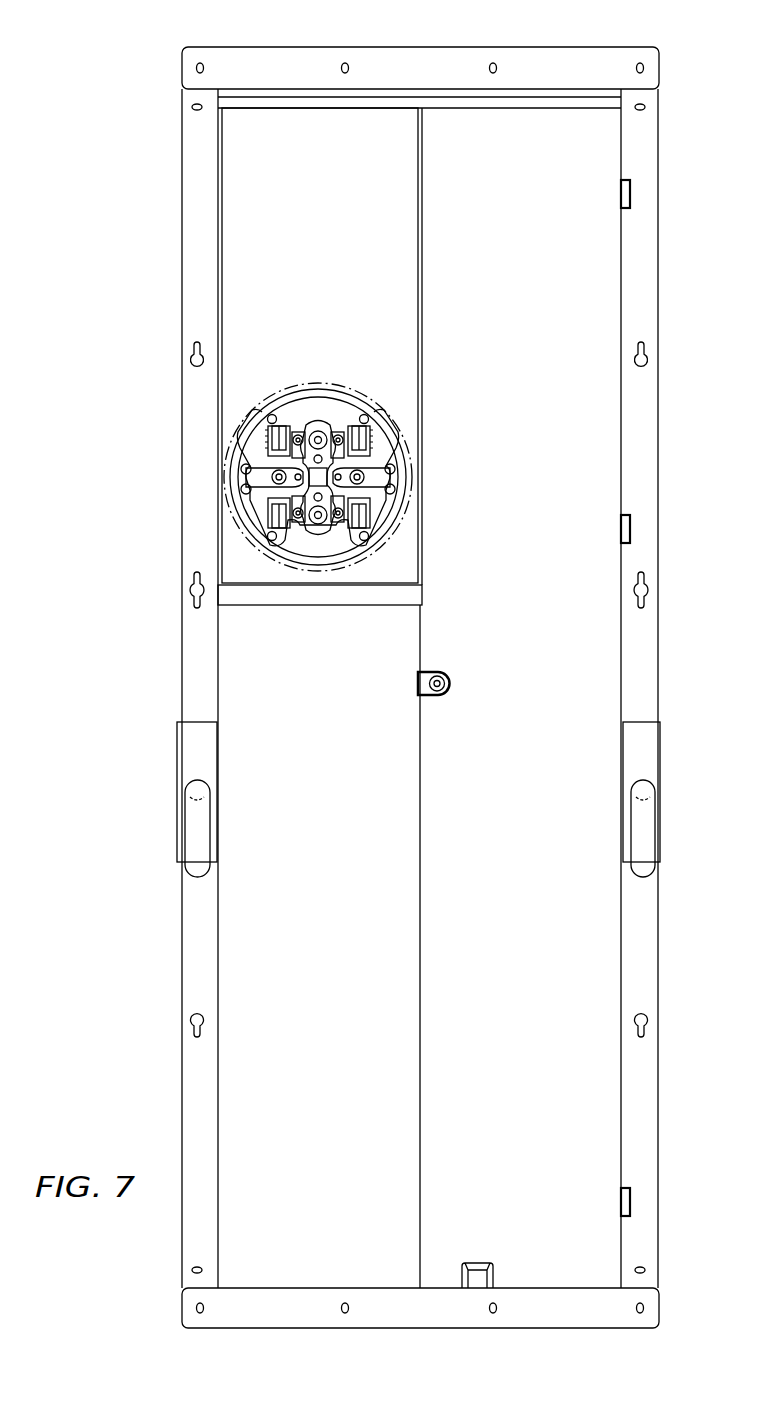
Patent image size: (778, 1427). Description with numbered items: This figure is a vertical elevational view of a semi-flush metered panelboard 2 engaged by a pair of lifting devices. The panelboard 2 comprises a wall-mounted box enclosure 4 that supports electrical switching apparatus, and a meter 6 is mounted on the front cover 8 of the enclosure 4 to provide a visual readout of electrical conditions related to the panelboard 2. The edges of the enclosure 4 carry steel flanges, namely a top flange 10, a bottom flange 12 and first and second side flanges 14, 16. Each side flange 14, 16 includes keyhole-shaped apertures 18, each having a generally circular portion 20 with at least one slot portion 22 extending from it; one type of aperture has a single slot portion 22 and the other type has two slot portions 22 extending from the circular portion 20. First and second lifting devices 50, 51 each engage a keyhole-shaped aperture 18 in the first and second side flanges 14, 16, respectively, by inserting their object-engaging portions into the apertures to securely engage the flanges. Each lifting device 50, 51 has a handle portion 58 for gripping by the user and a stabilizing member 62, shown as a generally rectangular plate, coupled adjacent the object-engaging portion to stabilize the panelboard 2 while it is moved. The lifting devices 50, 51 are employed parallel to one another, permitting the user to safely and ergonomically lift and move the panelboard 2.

The semi-flush metered panelboard 2 is at (422, 666).
The enclosure 4 is at (422, 698).
The meter 6 is at (267, 566).
The front cover 8 is at (340, 687).
The top flange 10 is at (452, 58).
The bottom flange 12 is at (305, 1300).
The first side flange 14 is at (187, 185).
The second side flange 16 is at (630, 255).
The keyhole-shaped aperture 18 is at (172, 568).
The generally circular portion 20 is at (192, 361).
The slot portion 22 is at (194, 348).
The first lifting device 50 is at (410, 782).
The second lifting device 51 is at (680, 738).
The handle portion 58 is at (190, 834).
The stabilizing member 62 is at (206, 742).